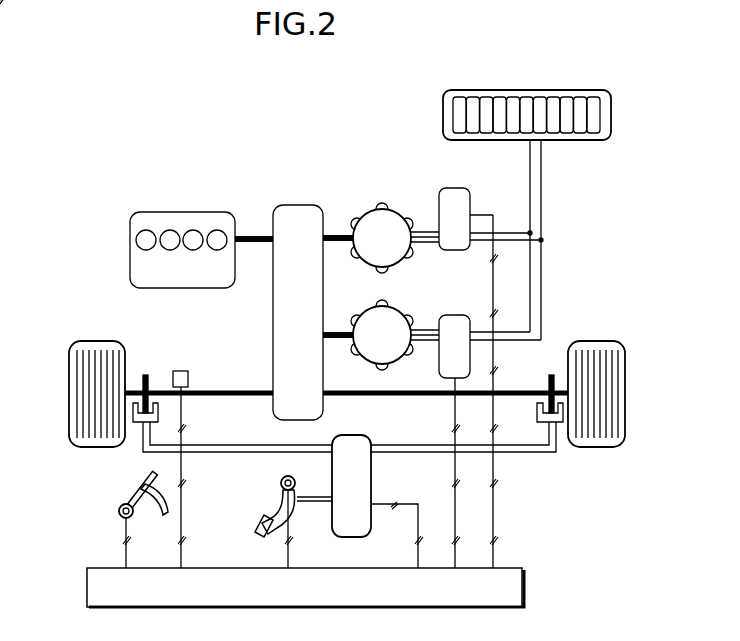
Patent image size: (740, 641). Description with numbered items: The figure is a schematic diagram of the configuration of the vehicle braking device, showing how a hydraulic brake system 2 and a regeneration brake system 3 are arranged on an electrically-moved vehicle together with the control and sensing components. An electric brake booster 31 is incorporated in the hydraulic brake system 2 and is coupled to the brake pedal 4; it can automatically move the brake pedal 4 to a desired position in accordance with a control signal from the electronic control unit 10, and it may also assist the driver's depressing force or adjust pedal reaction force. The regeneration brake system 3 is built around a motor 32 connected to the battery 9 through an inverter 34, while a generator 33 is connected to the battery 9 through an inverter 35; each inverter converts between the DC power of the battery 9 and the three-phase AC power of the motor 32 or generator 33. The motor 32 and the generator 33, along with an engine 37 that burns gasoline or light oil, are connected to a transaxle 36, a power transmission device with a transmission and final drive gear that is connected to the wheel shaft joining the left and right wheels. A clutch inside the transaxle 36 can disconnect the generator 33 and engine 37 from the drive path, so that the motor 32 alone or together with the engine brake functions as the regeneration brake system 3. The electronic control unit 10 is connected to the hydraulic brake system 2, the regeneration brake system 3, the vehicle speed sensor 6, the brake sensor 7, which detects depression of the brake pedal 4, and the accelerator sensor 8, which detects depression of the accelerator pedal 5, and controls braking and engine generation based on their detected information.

The hydraulic brake system 2 is at (389, 479).
The regeneration brake system 3 is at (397, 140).
The brake pedal 4 is at (240, 508).
The accelerator pedal 5 is at (127, 488).
The vehicle speed sensor 6 is at (181, 371).
The brake sensor 7 is at (281, 482).
The accelerator sensor 8 is at (118, 509).
The battery 9 is at (611, 116).
The electronic control unit 10 is at (523, 590).
The electric brake booster 31 is at (372, 440).
The motor 32 is at (405, 315).
The generator 33 is at (370, 211).
The inverter 34 is at (462, 315).
The inverter 35 is at (455, 188).
The transaxle 36 is at (296, 205).
The engine 37 is at (182, 212).